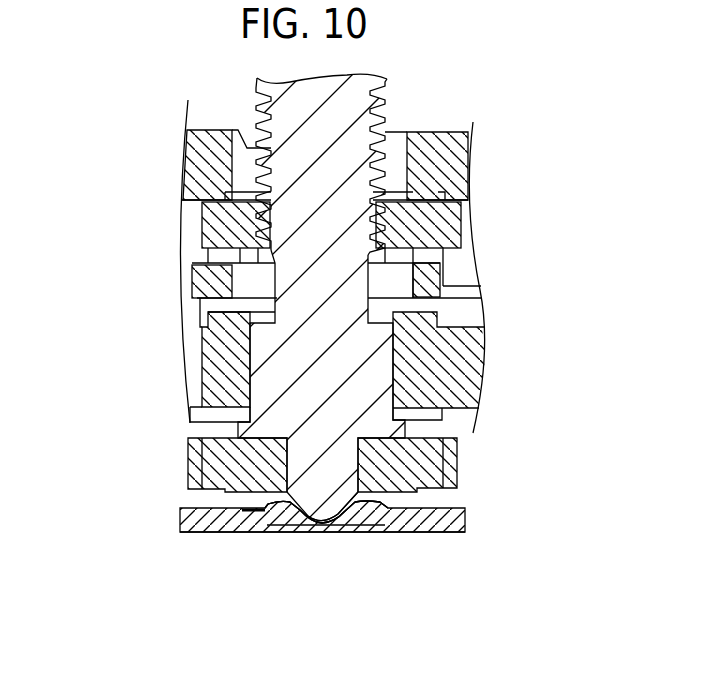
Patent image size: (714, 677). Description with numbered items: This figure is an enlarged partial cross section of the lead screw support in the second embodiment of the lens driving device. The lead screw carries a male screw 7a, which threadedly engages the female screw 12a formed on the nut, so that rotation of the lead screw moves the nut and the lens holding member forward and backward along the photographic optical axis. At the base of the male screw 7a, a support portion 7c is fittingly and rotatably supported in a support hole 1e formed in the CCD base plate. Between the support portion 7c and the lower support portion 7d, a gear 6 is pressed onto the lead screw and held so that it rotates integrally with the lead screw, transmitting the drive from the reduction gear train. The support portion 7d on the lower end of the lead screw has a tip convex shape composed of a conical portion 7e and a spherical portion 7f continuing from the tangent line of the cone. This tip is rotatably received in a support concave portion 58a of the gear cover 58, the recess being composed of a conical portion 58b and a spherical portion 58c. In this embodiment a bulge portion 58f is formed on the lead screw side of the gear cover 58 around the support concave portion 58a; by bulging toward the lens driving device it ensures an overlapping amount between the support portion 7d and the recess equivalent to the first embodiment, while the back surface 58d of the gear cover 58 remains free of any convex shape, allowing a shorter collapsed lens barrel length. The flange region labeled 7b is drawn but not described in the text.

The male screw 7a is at (363, 103).
The flange portion of screw 7b is at (353, 291).
The support portion 7c is at (385, 377).
The support portion 7d is at (457, 588).
The conical portion 7e is at (337, 497).
The spherical portion 7f is at (325, 514).
The female screw 12a is at (262, 226).
The support hole 1e is at (250, 377).
The gear 6 is at (435, 463).
The gear cover 58 is at (185, 512).
The support concave portion 58a is at (305, 588).
The conical portion 58b is at (265, 520).
The spherical portion 58c is at (320, 524).
The back surface 58d is at (205, 532).
The bulge portion 58f is at (257, 504).